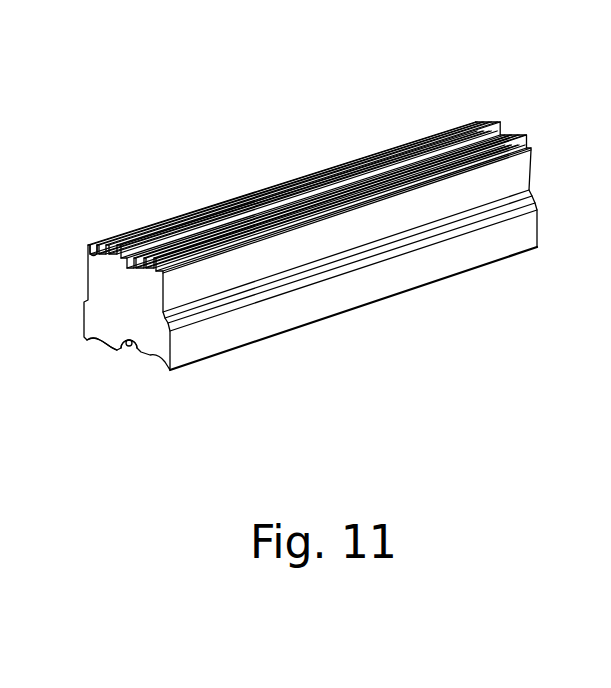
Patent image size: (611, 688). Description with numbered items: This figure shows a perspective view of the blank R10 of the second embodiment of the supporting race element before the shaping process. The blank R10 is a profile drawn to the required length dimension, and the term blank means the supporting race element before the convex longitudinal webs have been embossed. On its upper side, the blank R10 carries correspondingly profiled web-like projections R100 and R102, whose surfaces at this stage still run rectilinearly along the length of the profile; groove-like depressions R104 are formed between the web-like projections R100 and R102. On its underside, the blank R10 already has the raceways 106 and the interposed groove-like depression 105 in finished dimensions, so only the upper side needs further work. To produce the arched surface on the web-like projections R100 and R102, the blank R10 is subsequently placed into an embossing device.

The blank of the supporting race element R10 is at (240, 120).
The web-like projection R100 is at (187, 230).
The web-like projection R102 is at (305, 212).
The groove-like depression R104 is at (103, 243).
The groove-like depression 105 is at (130, 350).
The raceway 106 is at (102, 344).